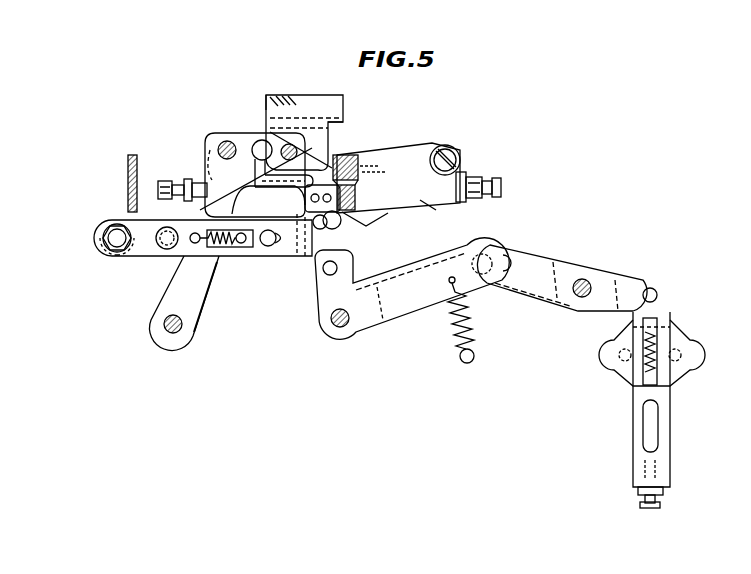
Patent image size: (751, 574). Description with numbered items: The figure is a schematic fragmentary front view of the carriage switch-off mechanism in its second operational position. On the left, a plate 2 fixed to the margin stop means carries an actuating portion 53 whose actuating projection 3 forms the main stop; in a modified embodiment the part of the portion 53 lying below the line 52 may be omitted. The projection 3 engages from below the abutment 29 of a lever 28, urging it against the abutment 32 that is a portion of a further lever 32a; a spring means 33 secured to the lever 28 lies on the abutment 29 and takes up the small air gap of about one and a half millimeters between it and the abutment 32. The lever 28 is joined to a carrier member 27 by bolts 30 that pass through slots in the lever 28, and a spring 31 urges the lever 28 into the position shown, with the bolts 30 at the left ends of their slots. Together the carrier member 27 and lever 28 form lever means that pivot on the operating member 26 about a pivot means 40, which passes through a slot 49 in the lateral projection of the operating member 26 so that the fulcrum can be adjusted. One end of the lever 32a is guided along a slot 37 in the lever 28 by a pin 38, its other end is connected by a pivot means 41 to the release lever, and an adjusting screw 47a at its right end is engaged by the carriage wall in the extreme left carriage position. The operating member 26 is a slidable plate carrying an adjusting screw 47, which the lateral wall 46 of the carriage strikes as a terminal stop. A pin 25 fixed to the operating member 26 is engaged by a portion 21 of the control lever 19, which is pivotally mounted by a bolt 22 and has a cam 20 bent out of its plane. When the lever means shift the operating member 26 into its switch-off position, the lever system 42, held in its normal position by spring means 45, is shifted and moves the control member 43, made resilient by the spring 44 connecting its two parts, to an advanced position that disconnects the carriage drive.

The plate 2 is at (266, 100).
The line 52 is at (288, 95).
The cam 20 is at (304, 124).
The actuating portion 53 is at (318, 130).
The portion of lever 21 is at (226, 133).
The pin 25 is at (258, 141).
The operating member 26 is at (218, 158).
The actuating projection 3 is at (322, 146).
The abutment 29 is at (340, 156).
The spring means 33 is at (357, 162).
The abutment 32 is at (360, 168).
The lever 32a is at (430, 212).
The pivot means 41 is at (445, 145).
The adjusting screw 47 is at (170, 181).
The adjusting screw 47a is at (500, 184).
The lateral wall 46 is at (128, 165).
The carrier member 27 is at (127, 218).
The pivot means 40 is at (102, 240).
The slot 49 is at (127, 257).
The bolts 30 is at (162, 250).
The lever 28 is at (172, 256).
The spring 31 is at (237, 248).
The control lever 19 is at (200, 309).
The bolt 22 is at (170, 344).
The slot 37 is at (384, 214).
The pin 38 is at (340, 228).
The lever system 42 is at (318, 306).
The spring means 45 is at (454, 332).
The spring 44 is at (630, 355).
The control member 43 is at (665, 422).